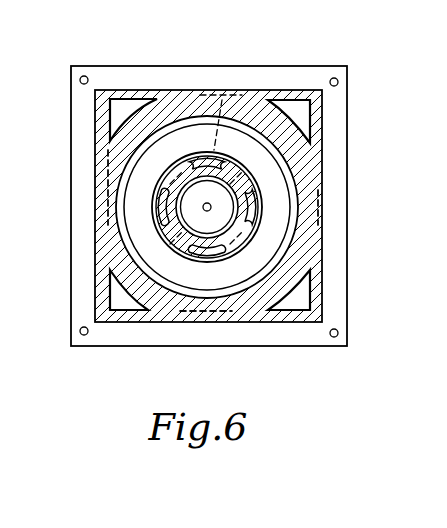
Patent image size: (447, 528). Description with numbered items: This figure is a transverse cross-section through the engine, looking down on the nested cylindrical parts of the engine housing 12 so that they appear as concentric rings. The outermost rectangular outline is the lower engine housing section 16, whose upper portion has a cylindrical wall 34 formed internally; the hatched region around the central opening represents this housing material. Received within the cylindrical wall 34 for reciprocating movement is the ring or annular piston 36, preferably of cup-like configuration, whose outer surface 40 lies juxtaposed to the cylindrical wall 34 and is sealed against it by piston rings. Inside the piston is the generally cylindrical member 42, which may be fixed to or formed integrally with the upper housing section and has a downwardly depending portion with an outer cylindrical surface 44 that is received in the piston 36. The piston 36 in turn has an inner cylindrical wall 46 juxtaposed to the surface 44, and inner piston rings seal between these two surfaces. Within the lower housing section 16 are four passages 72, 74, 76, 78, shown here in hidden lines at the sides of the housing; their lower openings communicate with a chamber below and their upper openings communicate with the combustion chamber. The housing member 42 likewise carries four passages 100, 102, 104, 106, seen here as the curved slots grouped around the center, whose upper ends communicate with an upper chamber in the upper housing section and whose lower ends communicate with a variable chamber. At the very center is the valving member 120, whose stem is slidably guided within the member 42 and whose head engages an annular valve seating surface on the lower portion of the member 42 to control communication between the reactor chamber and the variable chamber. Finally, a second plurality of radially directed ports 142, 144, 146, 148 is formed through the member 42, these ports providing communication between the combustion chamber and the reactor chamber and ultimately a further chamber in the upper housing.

The engine housing 12 is at (332, 112).
The lower engine housing section 16 is at (94, 296).
The cylindrical wall 34 is at (169, 134).
The annular piston 36 is at (127, 157).
The outer surface of piston 40 is at (150, 139).
The cylindrical member 42 is at (273, 223).
The outer cylindrical surface 44 is at (195, 128).
The inner cylindrical wall 46 is at (222, 252).
The passage 72 is at (222, 100).
The passage 74 is at (312, 205).
The passage 76 is at (192, 318).
The passage 78 is at (110, 212).
The passage 100 is at (208, 253).
The passage 102 is at (167, 221).
The passage 104 is at (212, 188).
The passage 106 is at (252, 202).
The valving member 120 is at (220, 163).
The radially directed port 142 is at (250, 157).
The radially directed port 144 is at (244, 250).
The radially directed port 146 is at (182, 240).
The radially directed port 148 is at (172, 160).